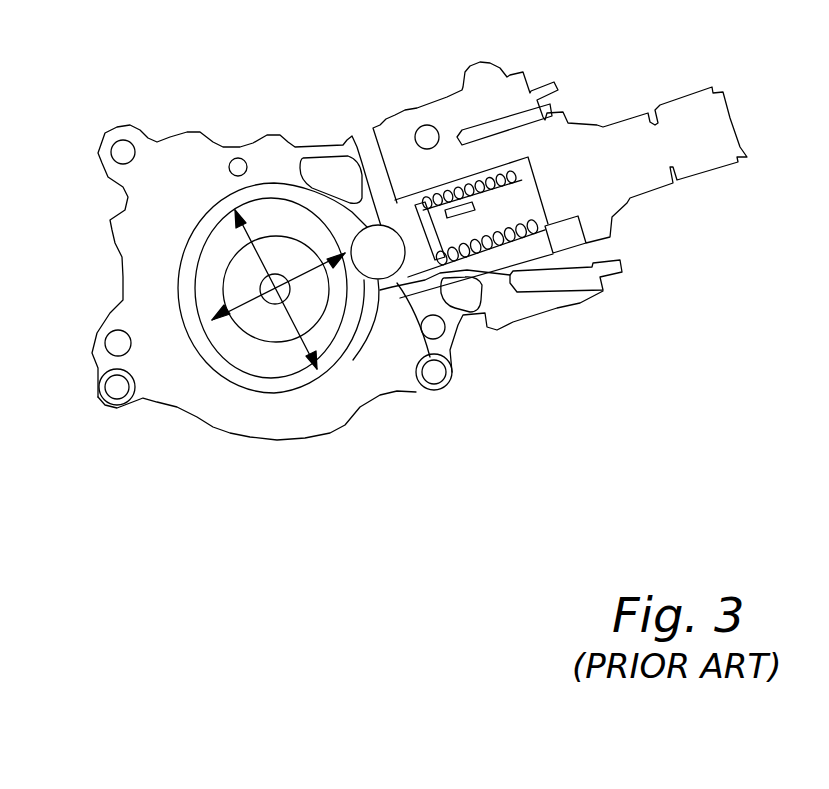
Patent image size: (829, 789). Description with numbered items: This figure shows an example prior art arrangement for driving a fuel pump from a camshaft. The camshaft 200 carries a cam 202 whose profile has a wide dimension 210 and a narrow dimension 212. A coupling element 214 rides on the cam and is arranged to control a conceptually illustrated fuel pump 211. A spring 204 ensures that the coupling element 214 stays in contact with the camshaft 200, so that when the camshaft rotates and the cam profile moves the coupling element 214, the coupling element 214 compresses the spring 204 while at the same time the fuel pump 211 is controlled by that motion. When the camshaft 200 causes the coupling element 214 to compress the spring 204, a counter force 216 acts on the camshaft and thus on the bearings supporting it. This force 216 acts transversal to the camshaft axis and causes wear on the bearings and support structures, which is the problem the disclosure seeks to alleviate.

The camshaft 200 is at (190, 343).
The cam 202 is at (237, 363).
The spring 204 is at (465, 203).
The wide dimension 210 is at (260, 280).
The fuel pump 211 is at (523, 197).
The narrow dimension 212 is at (322, 262).
The coupling element 214 is at (434, 390).
The counter force 216 is at (374, 240).